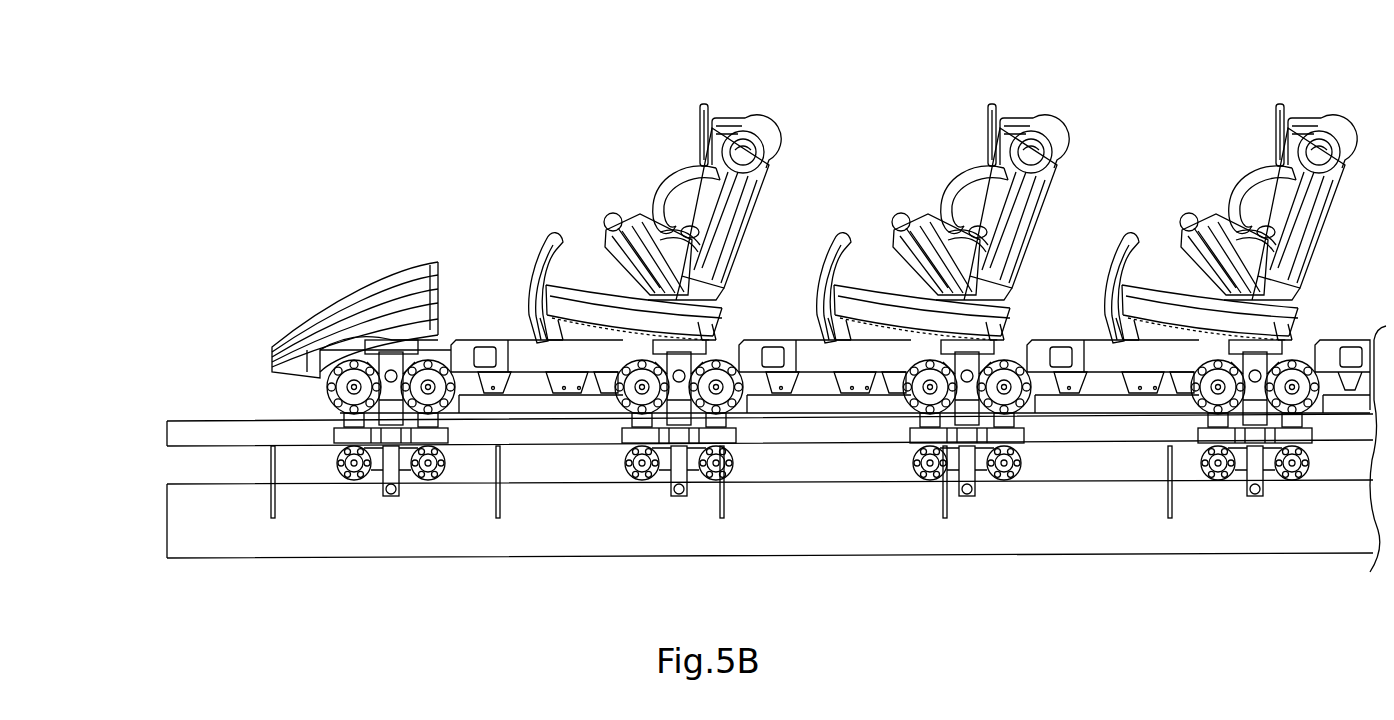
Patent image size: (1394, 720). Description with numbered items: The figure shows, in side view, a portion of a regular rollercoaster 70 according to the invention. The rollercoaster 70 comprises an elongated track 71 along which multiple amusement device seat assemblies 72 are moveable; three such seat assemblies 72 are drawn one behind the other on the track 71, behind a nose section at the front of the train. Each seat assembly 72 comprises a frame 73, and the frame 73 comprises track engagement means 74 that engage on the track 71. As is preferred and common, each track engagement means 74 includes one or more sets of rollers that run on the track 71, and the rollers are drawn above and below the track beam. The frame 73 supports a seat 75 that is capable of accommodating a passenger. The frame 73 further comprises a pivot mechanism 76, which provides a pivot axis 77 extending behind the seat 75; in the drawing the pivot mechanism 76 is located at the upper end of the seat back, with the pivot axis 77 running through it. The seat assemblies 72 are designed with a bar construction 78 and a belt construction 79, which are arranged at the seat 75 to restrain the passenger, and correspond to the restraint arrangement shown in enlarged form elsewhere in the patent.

The regular rollercoaster 70 is at (139, 513).
The elongated track 71 is at (1104, 523).
The amusement device seat assembly 72 is at (785, 99).
The frame 73 is at (528, 352).
The track engagement means 74 is at (660, 400).
The seat 75 is at (703, 227).
The pivot mechanism 76 is at (743, 128).
The pivot axis 77 is at (764, 141).
The bar construction 78 is at (700, 153).
The belt construction 79 is at (663, 197).